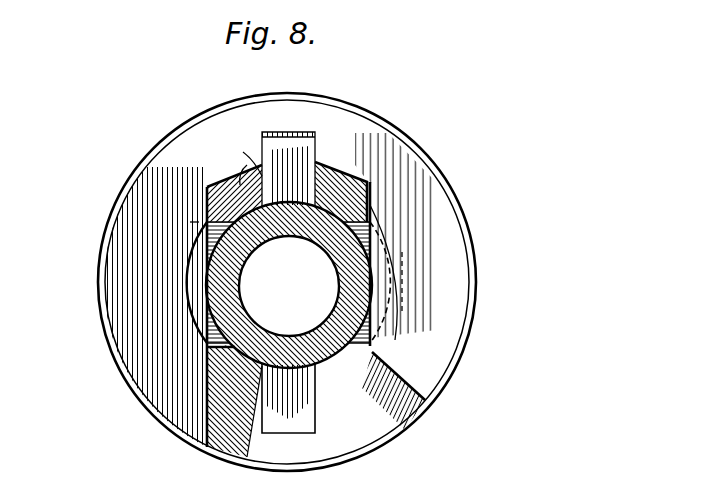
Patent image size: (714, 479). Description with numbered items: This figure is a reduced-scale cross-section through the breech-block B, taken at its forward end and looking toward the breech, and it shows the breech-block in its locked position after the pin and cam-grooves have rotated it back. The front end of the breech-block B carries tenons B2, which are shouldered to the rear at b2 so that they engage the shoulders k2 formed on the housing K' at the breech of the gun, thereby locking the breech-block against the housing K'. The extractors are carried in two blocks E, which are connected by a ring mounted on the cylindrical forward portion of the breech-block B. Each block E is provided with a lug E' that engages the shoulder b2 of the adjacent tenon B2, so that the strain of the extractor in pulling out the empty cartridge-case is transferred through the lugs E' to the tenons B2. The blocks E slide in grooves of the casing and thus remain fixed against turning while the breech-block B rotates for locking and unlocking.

The housing K' is at (287, 271).
The block E is at (304, 283).
The lug E' is at (316, 245).
The breech-block B is at (289, 285).
The tenon B2 is at (368, 207).
The shoulder b2 is at (207, 224).
The shoulder k2 is at (192, 283).